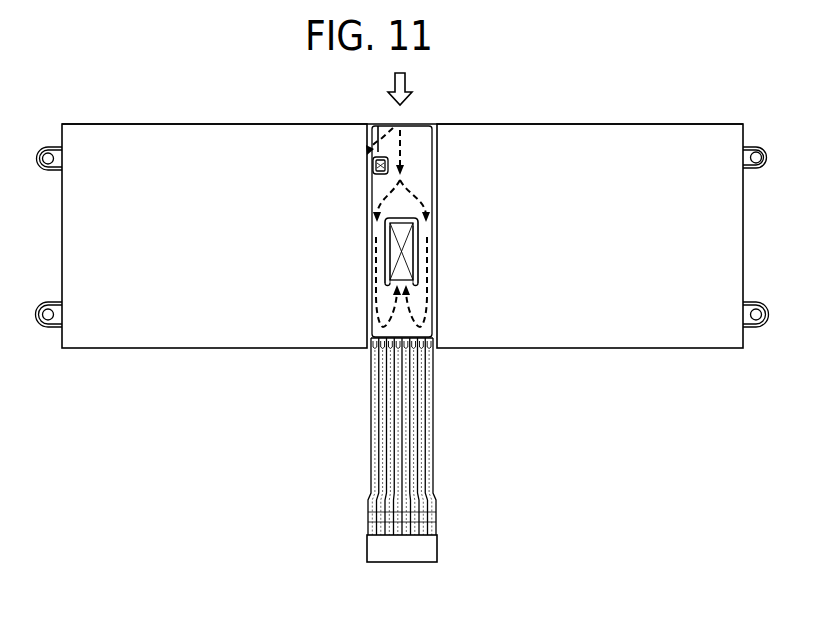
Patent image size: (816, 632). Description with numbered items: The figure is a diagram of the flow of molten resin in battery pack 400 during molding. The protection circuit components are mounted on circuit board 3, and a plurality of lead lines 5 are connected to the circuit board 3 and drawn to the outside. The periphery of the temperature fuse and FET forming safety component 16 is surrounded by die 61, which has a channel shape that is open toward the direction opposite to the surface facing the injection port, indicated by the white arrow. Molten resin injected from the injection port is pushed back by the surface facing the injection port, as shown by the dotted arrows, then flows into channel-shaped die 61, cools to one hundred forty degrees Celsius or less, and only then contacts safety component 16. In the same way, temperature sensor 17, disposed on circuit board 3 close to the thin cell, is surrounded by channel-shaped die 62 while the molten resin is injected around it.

The battery pack 400 is at (645, 86).
The circuit board 3 is at (417, 131).
The temperature sensor 17 is at (372, 166).
The channel-shaped die 62 is at (377, 125).
The safety component 16 is at (400, 248).
The die 61 is at (416, 268).
The lead lines 5 is at (432, 435).